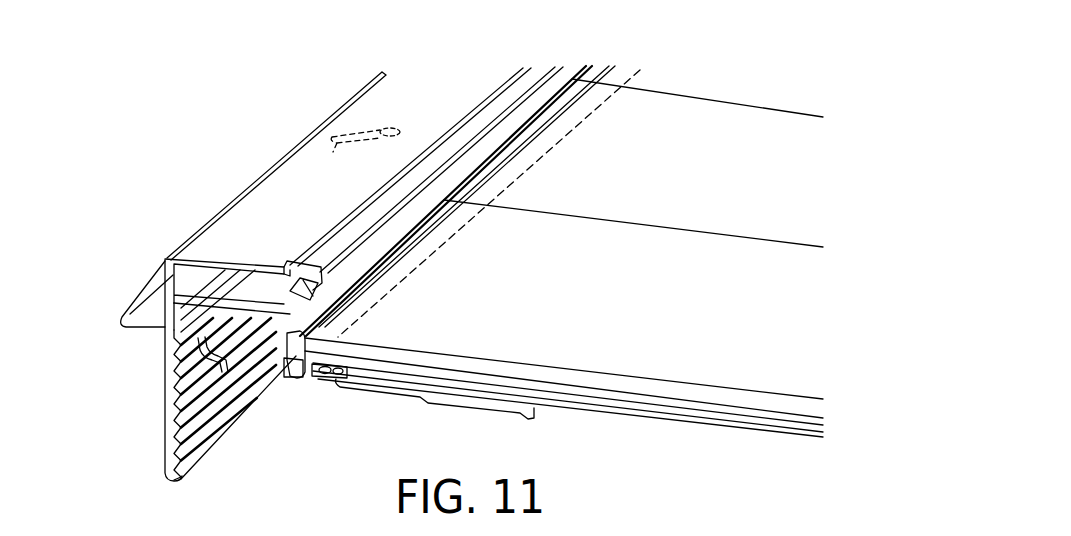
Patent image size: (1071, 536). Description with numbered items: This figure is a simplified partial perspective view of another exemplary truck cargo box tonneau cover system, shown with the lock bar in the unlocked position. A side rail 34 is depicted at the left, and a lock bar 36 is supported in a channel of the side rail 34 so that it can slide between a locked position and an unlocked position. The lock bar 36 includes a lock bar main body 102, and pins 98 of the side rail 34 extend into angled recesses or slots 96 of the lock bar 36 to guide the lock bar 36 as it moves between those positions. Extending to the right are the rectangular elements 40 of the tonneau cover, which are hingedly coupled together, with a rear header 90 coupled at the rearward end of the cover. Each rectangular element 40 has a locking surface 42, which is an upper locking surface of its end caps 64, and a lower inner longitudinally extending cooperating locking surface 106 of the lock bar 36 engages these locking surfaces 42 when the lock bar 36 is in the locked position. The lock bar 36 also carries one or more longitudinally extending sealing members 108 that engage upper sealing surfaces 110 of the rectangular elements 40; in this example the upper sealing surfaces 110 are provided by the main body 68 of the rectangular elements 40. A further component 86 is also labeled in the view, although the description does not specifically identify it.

The side rail 34 is at (143, 400).
The lock bar 36 is at (538, 62).
The rectangular element 40 is at (815, 90).
The locking surface 42 is at (350, 294).
The end cap 64 is at (262, 380).
The main body 68 is at (613, 401).
The panel support 86 is at (443, 398).
The rear header 90 is at (773, 360).
The angled slot 96 is at (333, 152).
The pin 98 is at (388, 126).
The lock bar main body 102 is at (186, 277).
The cooperating locking surface 106 is at (252, 280).
The sealing member 108 is at (378, 242).
The upper sealing surface 110 is at (355, 328).